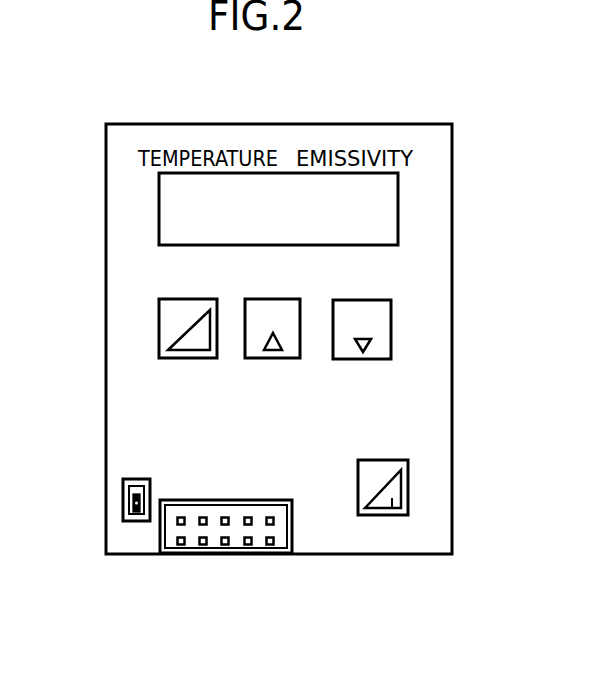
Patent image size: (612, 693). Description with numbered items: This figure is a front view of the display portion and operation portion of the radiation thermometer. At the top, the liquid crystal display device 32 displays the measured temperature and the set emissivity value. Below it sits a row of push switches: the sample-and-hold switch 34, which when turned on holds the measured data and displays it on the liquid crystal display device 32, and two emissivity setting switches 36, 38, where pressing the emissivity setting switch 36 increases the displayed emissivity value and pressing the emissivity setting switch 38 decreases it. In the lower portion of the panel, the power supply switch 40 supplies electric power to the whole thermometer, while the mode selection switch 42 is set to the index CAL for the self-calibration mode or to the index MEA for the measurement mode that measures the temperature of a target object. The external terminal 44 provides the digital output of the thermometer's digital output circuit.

The liquid crystal display device 32 is at (398, 217).
The sample-and-hold switch 34 is at (159, 318).
The emissivity setting switch 36 is at (280, 299).
The emissivity setting switch 38 is at (391, 326).
The power supply switch 40 is at (380, 515).
The mode selection switch 42 is at (123, 506).
The external terminal 44 is at (226, 554).